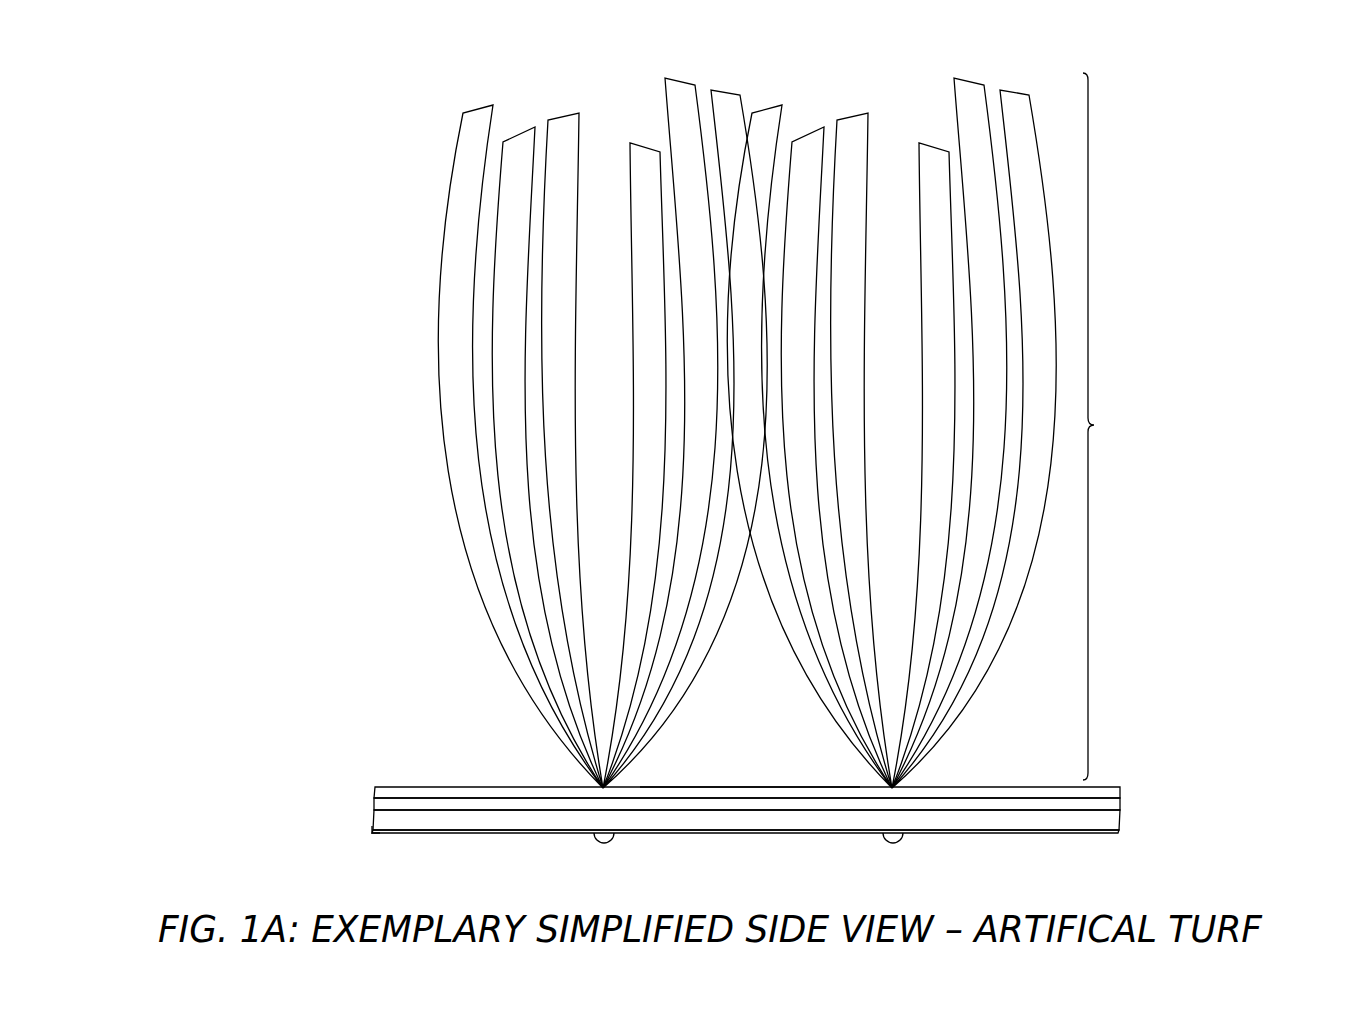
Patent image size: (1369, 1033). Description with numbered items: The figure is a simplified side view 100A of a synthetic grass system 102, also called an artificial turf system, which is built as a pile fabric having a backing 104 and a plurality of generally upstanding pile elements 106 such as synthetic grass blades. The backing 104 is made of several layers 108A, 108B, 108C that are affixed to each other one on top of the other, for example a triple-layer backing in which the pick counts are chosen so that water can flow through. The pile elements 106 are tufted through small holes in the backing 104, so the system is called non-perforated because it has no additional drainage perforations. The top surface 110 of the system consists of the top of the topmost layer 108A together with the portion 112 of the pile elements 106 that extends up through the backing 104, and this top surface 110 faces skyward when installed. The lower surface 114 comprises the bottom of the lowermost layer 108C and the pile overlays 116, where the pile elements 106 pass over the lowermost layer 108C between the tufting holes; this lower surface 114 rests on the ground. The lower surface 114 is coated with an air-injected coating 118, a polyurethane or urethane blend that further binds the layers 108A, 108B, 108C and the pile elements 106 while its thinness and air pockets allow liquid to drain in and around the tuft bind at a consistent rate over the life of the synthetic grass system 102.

The simplified side view 100A is at (1268, 82).
The synthetic grass system 102 is at (310, 603).
The backing 104 is at (370, 786).
The generally upstanding pile elements 106 is at (1037, 65).
The topmost layer 108A is at (1120, 787).
The middle layer 108B is at (1120, 810).
The lowermost layer 108C is at (1118, 830).
The top surface 110 is at (722, 765).
The portion of the pile elements 112 is at (1117, 426).
The lower surface 114 is at (658, 850).
The pile overlays 116 is at (900, 847).
The air-injected coating 118 is at (370, 837).